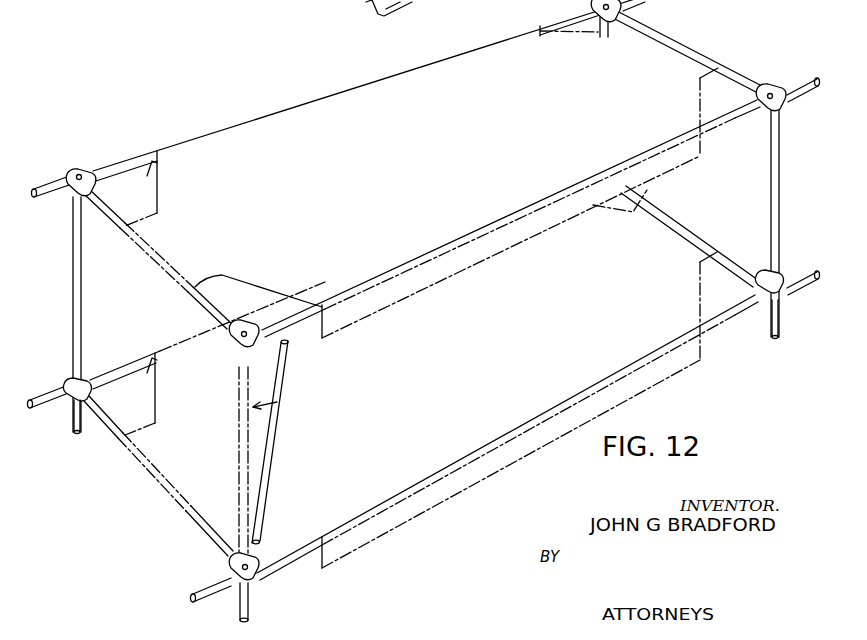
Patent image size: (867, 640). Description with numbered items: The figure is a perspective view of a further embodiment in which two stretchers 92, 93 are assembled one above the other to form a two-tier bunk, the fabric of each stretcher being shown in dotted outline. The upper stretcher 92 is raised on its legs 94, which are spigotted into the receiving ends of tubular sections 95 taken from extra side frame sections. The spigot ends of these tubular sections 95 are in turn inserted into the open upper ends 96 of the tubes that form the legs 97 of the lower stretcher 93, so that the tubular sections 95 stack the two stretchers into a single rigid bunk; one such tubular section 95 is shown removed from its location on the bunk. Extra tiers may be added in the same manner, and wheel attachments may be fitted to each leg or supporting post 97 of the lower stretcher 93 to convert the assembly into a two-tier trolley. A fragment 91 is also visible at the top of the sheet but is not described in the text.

The clip fragment 91 is at (426, 13).
The upper stretcher 92 is at (326, 108).
The lower stretcher 93 is at (413, 463).
The legs 94 is at (72, 194).
The tubular sections 95 is at (72, 285).
The open upper ends 96 is at (229, 566).
The legs 97 is at (73, 421).